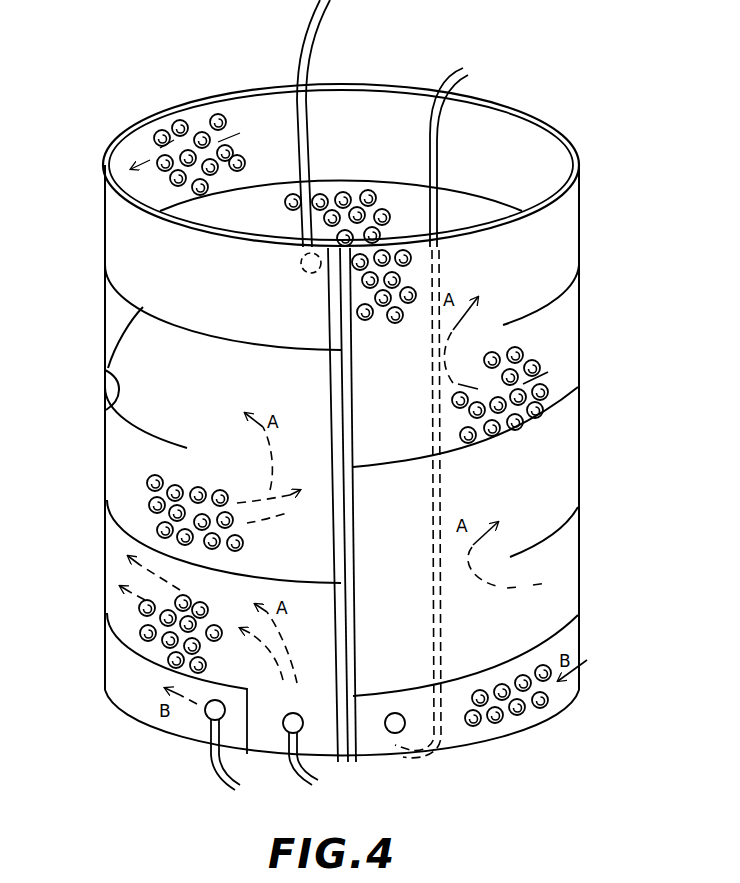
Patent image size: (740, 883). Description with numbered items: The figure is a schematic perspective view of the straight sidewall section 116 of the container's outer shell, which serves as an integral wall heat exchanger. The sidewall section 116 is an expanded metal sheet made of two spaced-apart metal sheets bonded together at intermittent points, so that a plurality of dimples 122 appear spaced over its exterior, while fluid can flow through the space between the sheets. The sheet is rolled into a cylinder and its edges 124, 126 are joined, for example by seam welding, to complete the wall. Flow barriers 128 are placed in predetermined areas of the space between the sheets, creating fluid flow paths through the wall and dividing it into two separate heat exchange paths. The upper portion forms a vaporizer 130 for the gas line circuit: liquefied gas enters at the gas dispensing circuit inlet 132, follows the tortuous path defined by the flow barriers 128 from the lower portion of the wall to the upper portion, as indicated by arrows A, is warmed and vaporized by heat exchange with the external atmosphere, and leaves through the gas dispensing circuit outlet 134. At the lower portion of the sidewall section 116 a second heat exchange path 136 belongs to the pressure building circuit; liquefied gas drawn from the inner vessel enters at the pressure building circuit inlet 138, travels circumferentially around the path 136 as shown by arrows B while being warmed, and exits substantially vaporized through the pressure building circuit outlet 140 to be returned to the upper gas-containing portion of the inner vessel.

The straight sidewall section 116 is at (104, 233).
The dimples 122 is at (162, 130).
The edge 124 is at (328, 305).
The edge 126 is at (350, 362).
The flow barriers 128 is at (108, 368).
The vaporizer 130 is at (562, 235).
The gas dispensing circuit inlet 132 is at (312, 785).
The gas dispensing circuit outlet 134 is at (333, 12).
The second heat exchange path 136 is at (143, 690).
The pressure building circuit inlet 138 is at (218, 783).
The pressure building circuit outlet 140 is at (452, 78).